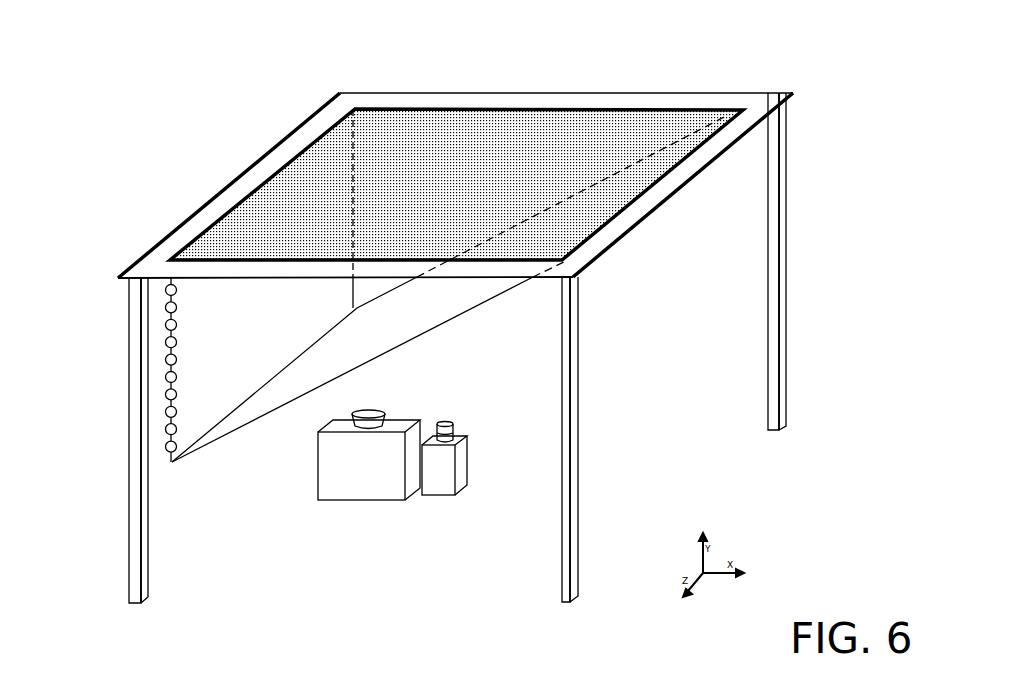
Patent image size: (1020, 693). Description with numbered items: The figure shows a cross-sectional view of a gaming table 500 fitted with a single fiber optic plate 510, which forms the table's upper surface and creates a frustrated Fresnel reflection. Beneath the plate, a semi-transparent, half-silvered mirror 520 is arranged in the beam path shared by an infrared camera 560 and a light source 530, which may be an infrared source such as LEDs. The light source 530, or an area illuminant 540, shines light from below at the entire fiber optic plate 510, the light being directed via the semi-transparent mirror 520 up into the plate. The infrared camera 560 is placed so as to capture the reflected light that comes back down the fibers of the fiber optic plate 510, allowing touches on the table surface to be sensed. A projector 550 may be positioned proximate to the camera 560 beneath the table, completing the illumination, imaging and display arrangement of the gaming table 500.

The gaming table 500 is at (196, 116).
The fiber optic plate 510 is at (430, 135).
The semi-transparent mirror 520 is at (408, 308).
The light source 530 is at (170, 375).
The area illuminant 540 is at (205, 328).
The projector 550 is at (339, 472).
The infrared camera 560 is at (438, 482).